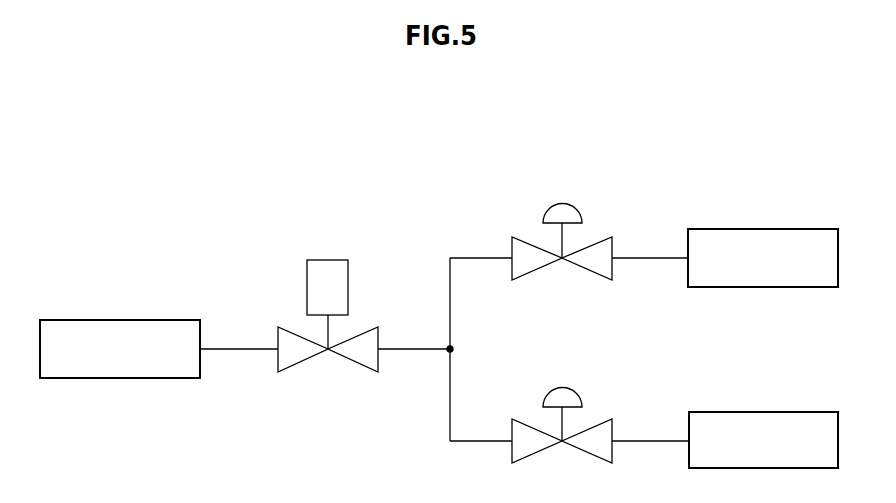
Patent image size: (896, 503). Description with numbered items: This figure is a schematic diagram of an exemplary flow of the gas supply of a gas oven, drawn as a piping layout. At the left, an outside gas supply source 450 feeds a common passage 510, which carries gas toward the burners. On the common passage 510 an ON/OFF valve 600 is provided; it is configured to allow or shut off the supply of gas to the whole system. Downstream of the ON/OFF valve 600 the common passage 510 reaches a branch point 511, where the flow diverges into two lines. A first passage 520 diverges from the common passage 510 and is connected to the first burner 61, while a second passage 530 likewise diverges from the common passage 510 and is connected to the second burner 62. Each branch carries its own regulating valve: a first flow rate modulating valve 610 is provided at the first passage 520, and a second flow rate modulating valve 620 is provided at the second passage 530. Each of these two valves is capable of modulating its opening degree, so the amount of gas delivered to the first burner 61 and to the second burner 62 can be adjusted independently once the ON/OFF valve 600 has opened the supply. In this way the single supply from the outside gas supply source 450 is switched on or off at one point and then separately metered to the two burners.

The outside gas supply source 450 is at (130, 319).
The common passage 510 is at (237, 347).
The ON/OFF valve 600 is at (328, 259).
The branch point 511 is at (447, 352).
The first passage 520 is at (482, 257).
The first flow rate modulating valve 610 is at (563, 205).
The first burner 61 is at (757, 228).
The second passage 530 is at (482, 440).
The second flow rate modulating valve 620 is at (565, 388).
The second burner 62 is at (756, 411).